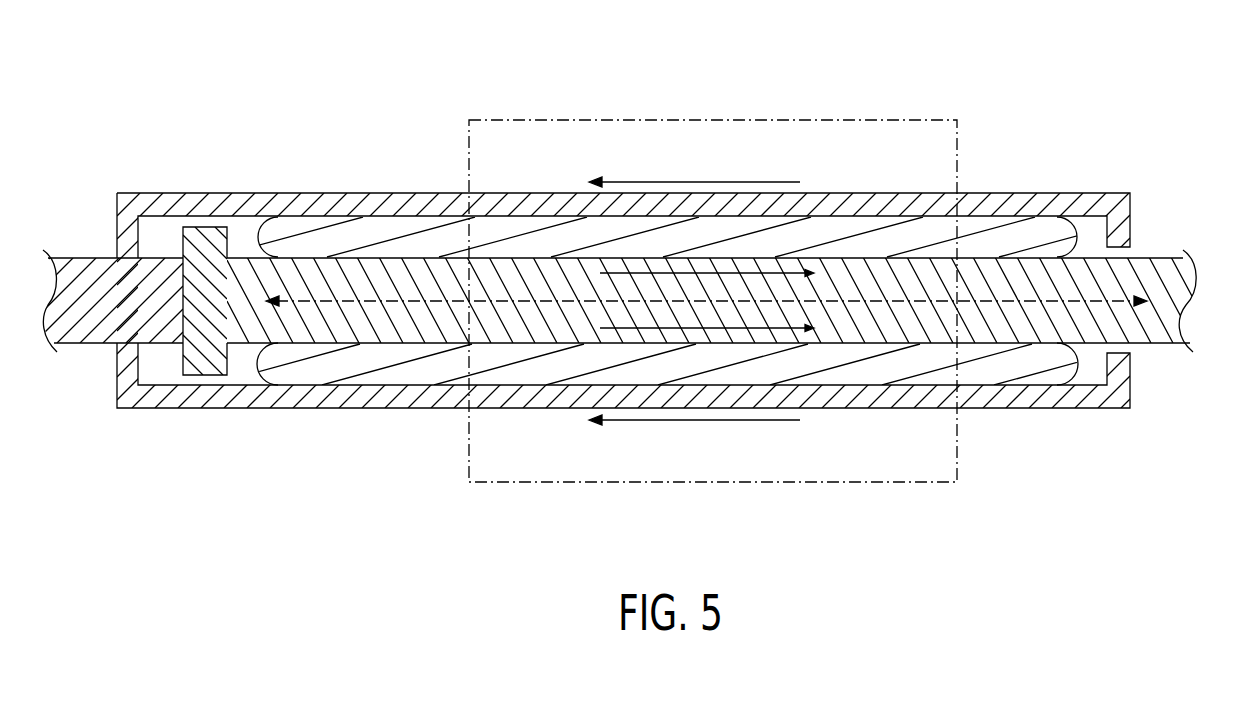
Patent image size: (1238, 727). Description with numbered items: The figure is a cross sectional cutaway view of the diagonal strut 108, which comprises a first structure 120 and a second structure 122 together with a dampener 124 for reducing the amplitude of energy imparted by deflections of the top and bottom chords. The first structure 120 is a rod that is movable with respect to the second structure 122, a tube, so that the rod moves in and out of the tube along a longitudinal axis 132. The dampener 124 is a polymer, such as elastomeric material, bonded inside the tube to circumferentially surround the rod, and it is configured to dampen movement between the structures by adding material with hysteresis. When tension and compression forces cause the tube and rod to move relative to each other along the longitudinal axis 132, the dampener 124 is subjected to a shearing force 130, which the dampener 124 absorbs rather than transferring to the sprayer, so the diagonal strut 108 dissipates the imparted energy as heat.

The diagonal strut 108 is at (481, 84).
The first structure 120 is at (1165, 331).
The second structure 122 is at (186, 193).
The dampener 124 is at (317, 240).
The shearing force 130 is at (713, 120).
The longitudinal axis 132 is at (408, 284).